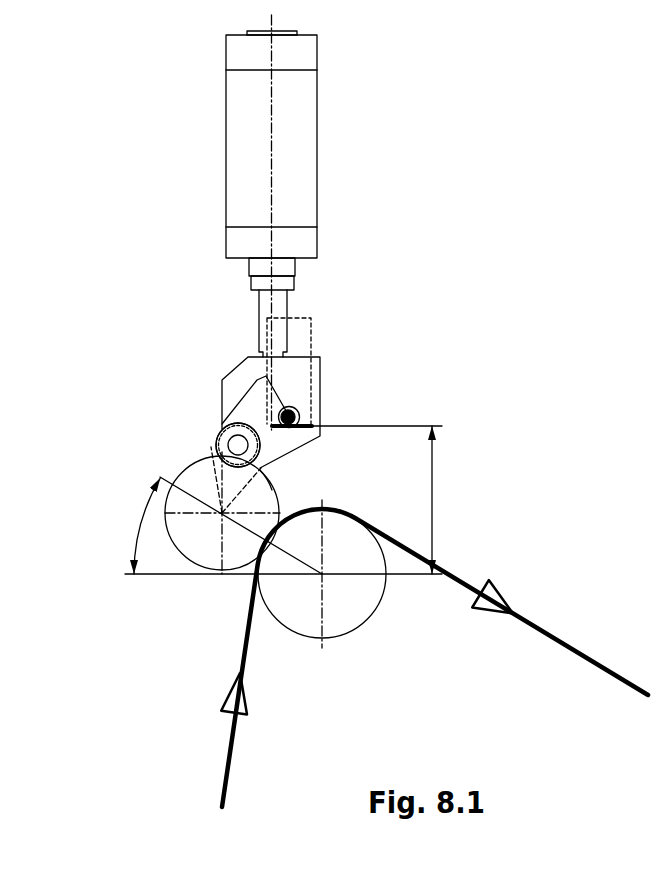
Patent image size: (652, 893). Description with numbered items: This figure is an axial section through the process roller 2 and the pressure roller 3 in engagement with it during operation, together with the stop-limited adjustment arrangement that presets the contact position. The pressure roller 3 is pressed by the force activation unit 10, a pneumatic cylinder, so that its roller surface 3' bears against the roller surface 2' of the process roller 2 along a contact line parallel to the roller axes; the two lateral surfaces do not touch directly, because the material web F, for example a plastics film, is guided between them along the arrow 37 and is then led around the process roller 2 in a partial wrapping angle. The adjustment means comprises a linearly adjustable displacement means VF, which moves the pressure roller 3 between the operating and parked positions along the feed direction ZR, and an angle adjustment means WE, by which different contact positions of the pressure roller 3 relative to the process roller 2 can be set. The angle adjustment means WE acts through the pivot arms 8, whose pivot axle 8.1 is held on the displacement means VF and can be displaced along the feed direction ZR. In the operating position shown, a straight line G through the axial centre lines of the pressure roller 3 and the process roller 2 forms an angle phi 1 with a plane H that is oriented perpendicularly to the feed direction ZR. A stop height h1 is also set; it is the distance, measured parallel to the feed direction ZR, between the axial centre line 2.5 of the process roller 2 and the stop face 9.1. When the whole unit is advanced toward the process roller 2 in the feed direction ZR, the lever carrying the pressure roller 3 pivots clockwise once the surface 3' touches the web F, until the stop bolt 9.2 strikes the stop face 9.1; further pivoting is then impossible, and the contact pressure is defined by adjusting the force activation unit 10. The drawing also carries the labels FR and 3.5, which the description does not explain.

The force activation unit 10 is at (387, 144).
The feed direction ZR is at (413, 222).
The displacement means VF is at (401, 307).
The angle adjustment means WE is at (184, 412).
The pivot axle 8.1 is at (144, 389).
The pivot arms 8 is at (238, 445).
The stop bolt 9.2 is at (418, 354).
The stop face 9.1 is at (413, 380).
The roller surface of the pressure roller 3' is at (403, 432).
The stop height h1 is at (377, 500).
The pressure roller 3 is at (173, 568).
The line of centers / feed direction FR is at (188, 500).
The angle phi 1 is at (134, 526).
The horizontal reference plane 3.5 is at (247, 593).
The plane H is at (116, 612).
The straight line G is at (182, 644).
The process roller 2 is at (391, 604).
The roller surface of the process roller 2' is at (439, 669).
The axial centre line of the process roller 2.5 is at (373, 662).
The material web F is at (357, 676).
The arrow 37 is at (152, 734).